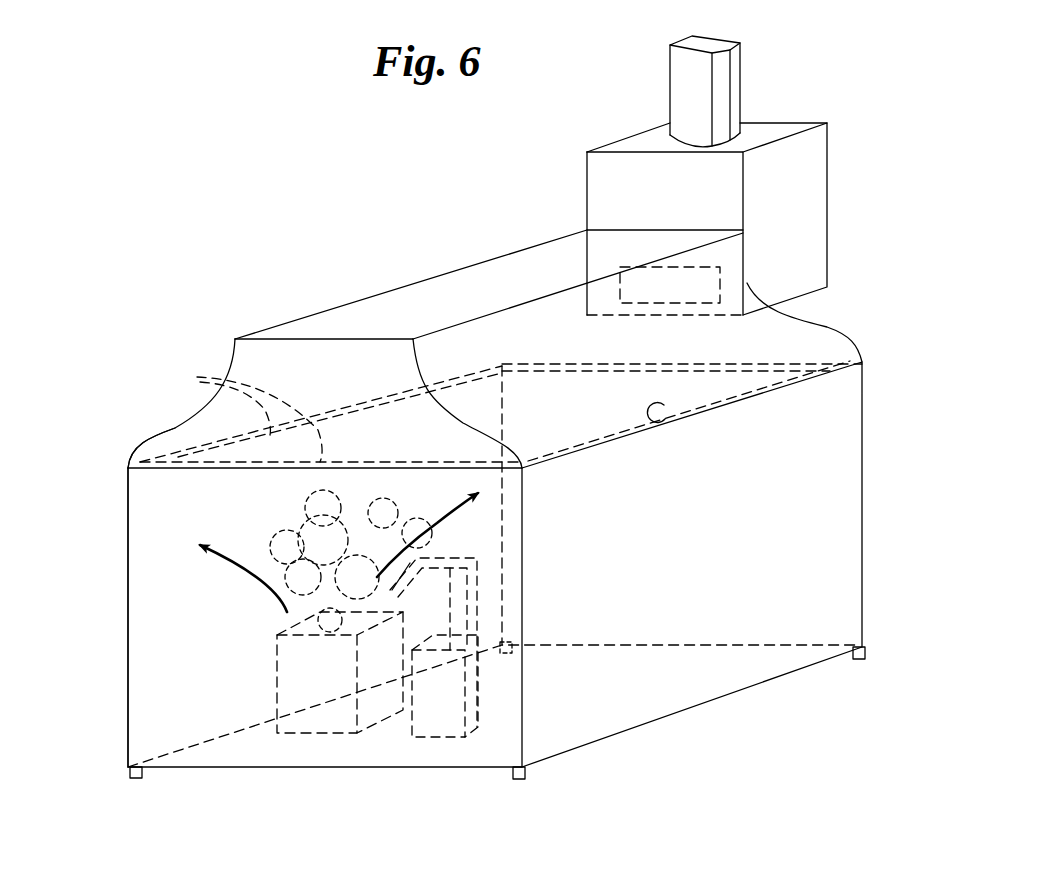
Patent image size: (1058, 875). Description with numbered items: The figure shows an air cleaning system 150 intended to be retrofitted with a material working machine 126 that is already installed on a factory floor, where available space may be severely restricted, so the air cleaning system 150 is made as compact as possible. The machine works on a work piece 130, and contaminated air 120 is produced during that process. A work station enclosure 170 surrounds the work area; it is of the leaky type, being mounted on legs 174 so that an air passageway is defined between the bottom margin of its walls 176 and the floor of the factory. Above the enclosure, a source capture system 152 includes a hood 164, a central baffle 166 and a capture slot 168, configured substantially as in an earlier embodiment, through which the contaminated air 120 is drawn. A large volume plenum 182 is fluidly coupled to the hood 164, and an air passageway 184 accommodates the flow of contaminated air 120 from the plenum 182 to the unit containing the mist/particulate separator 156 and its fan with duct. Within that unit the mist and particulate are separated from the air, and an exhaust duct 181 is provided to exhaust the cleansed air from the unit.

The contaminated air 120 is at (273, 547).
The material working machine 126 is at (450, 550).
The work piece 130 is at (313, 637).
The air cleaning system 150 is at (380, 260).
The source capture system 152 is at (240, 440).
The mist/particulate separator 156 is at (603, 180).
The hood 164 is at (150, 434).
The central baffle 166 is at (600, 385).
The capture slot 168 is at (673, 413).
The work station enclosure 170 is at (124, 578).
The legs 174 is at (142, 775).
The walls 176 is at (128, 645).
The exhaust duct 181 is at (668, 73).
The plenum 182 is at (260, 355).
The air passageway 184 is at (620, 267).